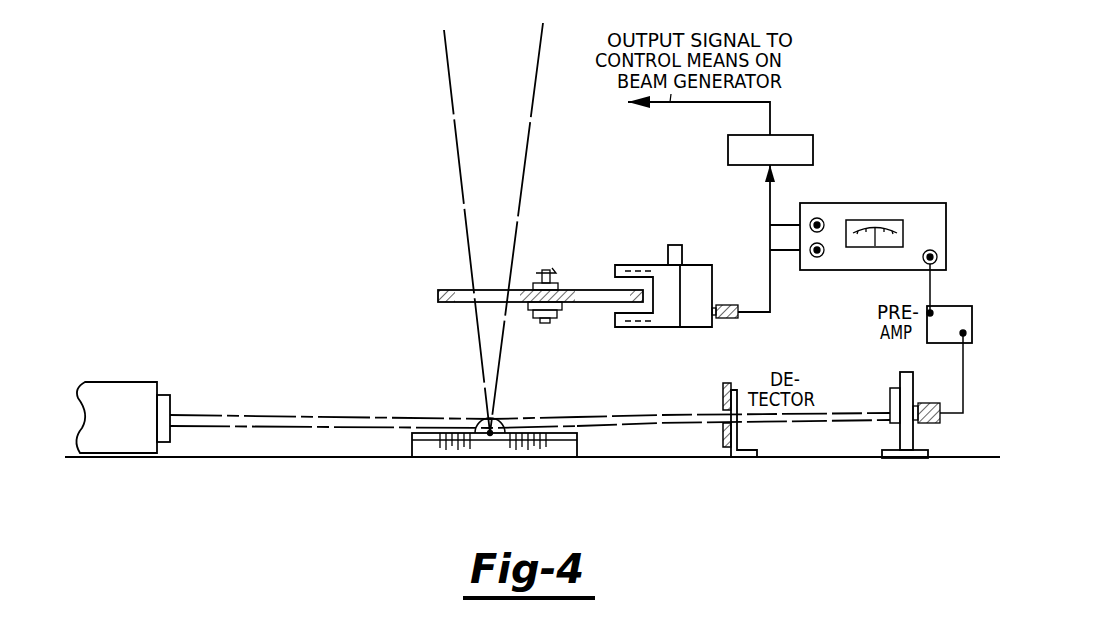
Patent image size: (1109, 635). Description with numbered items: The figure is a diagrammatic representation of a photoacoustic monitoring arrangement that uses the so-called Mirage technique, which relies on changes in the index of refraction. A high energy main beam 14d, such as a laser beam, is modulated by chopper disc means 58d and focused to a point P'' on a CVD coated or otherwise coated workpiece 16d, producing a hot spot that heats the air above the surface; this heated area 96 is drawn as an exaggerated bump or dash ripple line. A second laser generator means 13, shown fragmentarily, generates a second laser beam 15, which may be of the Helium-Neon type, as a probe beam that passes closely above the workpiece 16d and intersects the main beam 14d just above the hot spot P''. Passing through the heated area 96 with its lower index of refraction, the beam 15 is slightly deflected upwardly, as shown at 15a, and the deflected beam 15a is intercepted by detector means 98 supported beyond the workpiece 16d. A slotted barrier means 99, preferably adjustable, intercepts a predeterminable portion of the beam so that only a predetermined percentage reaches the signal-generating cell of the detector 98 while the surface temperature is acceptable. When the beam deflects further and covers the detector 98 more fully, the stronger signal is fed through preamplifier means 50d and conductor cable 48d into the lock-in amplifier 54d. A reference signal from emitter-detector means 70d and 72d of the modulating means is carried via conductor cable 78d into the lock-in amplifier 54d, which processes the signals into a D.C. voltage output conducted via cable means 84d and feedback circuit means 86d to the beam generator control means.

The second laser generator means 13 is at (122, 382).
The second laser beam 15 is at (272, 410).
The deflected beam 15a is at (705, 385).
The main beam 14d is at (466, 215).
The chopper disc means 58d is at (440, 290).
The emitter-detector means 70d is at (620, 280).
The emitter-detector means 72d is at (617, 312).
The conductor cable 78d is at (772, 298).
The cable means 84d is at (772, 197).
The feedback circuit means 86d is at (720, 129).
The lock-in amplifier means 54d is at (965, 152).
The conductor cable 48d is at (932, 277).
The preamplifier means 50d is at (925, 340).
The heated area 96 is at (482, 418).
The focused point P'' is at (441, 467).
The workpiece 16d is at (577, 447).
The slotted barrier means 99 is at (740, 430).
The detector means 98 is at (893, 392).